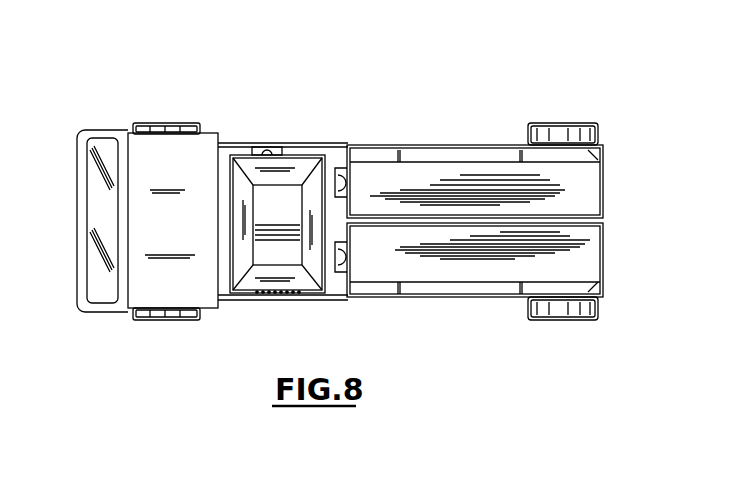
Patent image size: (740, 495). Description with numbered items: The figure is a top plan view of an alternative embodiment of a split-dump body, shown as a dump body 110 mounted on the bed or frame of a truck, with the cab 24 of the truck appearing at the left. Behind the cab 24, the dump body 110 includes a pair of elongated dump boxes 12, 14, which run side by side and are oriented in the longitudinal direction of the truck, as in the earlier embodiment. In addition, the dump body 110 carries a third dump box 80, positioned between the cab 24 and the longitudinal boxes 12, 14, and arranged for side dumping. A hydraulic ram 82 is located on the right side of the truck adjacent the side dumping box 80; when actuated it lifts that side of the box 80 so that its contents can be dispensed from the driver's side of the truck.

The dump body 110 is at (328, 339).
The cab 24 is at (158, 140).
The third dump box 80 is at (298, 168).
The hydraulic ram 82 is at (265, 146).
The elongated dump box 14 is at (447, 156).
The elongated dump box 12 is at (420, 272).